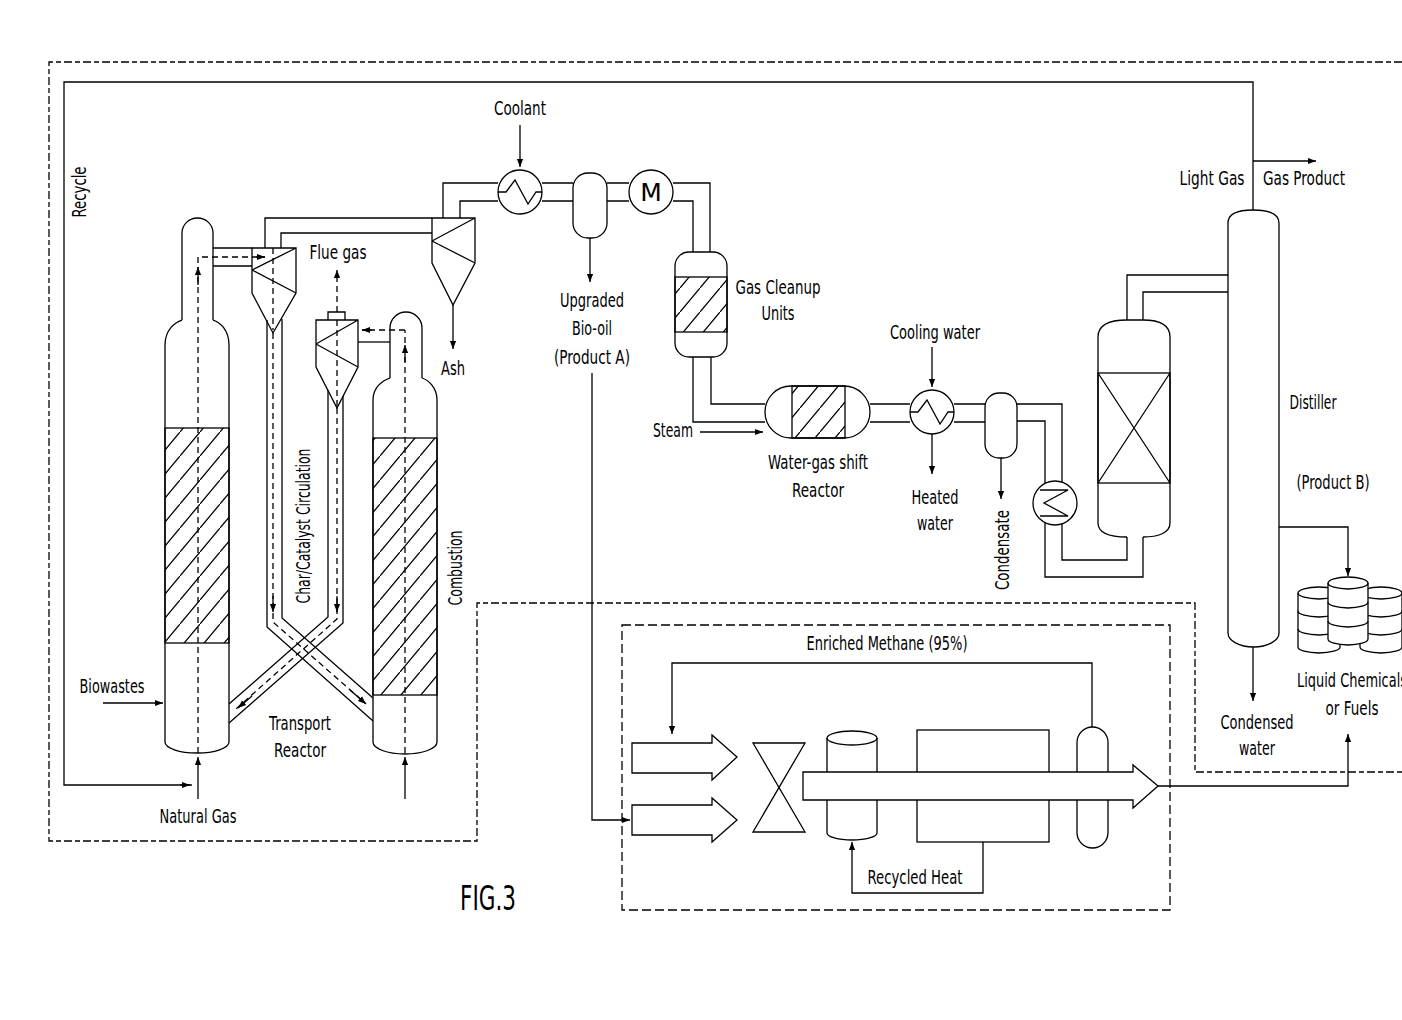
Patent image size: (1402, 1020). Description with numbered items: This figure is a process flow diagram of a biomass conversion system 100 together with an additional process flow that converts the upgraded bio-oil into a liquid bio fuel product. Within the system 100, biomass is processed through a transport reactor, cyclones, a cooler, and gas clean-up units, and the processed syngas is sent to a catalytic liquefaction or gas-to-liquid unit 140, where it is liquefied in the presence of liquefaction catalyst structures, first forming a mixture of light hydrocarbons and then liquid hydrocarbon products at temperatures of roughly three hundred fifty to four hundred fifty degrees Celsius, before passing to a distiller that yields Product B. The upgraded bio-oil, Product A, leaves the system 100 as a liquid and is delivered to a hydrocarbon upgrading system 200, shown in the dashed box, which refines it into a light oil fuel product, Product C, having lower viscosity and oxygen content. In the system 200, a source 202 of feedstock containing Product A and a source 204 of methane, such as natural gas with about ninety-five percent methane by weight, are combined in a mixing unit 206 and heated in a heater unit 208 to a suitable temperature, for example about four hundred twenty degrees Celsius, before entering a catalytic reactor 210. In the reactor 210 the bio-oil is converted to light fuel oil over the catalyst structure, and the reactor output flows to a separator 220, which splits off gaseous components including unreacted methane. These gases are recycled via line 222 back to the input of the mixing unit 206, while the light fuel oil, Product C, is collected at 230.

The system 100 is at (1285, 51).
The catalytic liquefaction or gas-to-liquid (GTL) unit 140 is at (1107, 327).
The hydrocarbon upgrading system 200 is at (1186, 868).
The source of feedstock 202 is at (688, 838).
The source of methane 204 is at (647, 743).
The mixing unit 206 is at (782, 742).
The heater unit 208 is at (840, 839).
The catalytic reactor 210 is at (983, 729).
The separator 220 is at (1109, 743).
The line 222 is at (928, 665).
The collection point 230 is at (1315, 790).